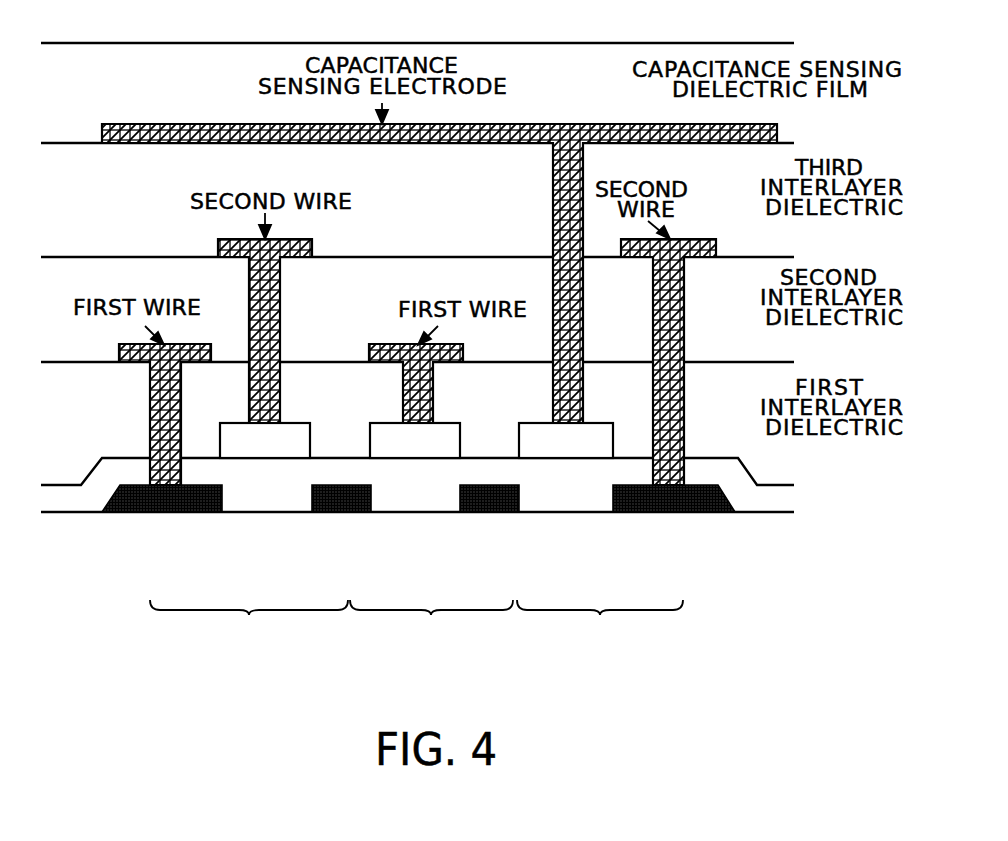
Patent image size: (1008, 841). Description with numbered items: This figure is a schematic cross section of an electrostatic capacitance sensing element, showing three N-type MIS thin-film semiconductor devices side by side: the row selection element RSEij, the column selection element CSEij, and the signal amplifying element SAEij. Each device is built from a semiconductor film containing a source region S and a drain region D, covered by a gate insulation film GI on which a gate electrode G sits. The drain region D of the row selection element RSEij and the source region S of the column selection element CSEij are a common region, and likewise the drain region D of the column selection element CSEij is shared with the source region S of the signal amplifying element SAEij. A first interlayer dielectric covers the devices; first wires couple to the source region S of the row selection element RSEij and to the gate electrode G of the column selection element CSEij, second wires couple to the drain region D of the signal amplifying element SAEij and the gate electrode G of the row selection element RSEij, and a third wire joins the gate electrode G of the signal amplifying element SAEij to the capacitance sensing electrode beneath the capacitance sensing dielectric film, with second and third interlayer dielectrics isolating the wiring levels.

The gate electrode G is at (416, 440).
The gate insulation film GI is at (417, 471).
The source region S is at (200, 512).
The drain region D is at (628, 512).
The row selection element RSEij is at (241, 645).
The column selection element CSEij is at (436, 655).
The signal amplifying element SAEij is at (641, 645).